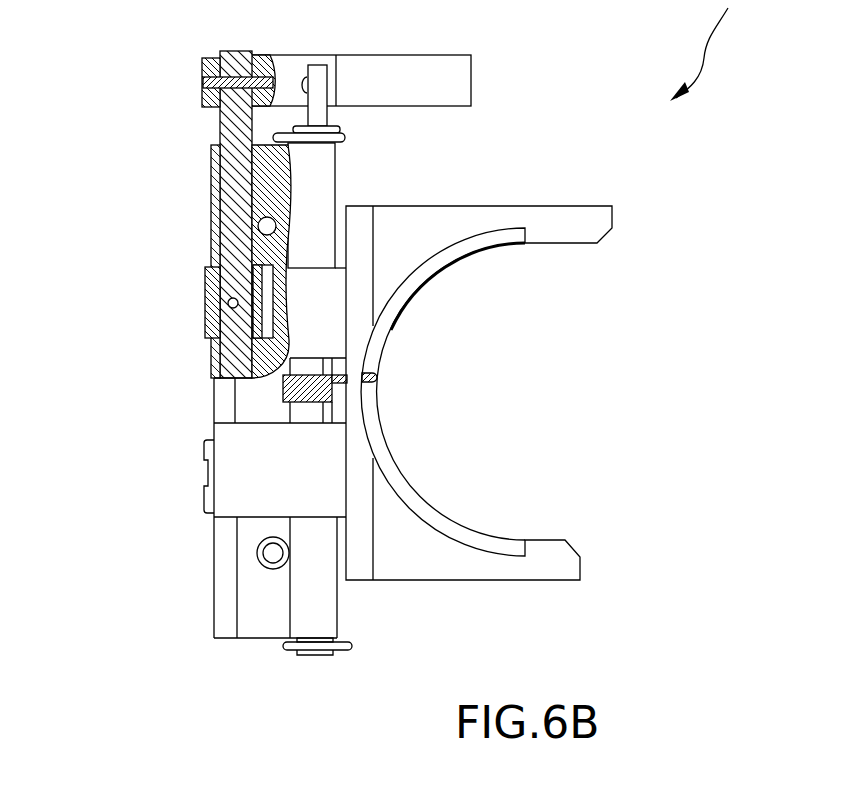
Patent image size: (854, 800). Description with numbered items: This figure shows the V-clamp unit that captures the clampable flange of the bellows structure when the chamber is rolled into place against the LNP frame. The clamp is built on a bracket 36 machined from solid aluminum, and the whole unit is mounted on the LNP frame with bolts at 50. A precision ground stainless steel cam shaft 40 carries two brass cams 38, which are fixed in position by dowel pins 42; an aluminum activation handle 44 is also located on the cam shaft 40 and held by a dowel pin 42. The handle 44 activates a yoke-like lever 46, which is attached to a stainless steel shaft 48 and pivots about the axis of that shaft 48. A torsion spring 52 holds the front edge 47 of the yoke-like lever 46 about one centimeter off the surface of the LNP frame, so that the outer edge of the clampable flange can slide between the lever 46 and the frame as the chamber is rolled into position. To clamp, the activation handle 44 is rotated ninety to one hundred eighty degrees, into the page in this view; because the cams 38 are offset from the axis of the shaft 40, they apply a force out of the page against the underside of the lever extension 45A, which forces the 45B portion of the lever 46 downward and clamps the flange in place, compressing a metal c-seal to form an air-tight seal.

The bracket 36 is at (214, 592).
The cams 38 is at (205, 323).
The cam shaft 40 is at (218, 52).
The dowel pins 42 is at (182, 83).
The activation handle 44 is at (471, 78).
The extension of yoke-like lever 45A is at (230, 442).
The portion of yoke-like lever 45B is at (467, 580).
The yoke-like lever 46 is at (588, 206).
The front edge 47 is at (583, 560).
The shaft 48 is at (323, 655).
The bolts 50 is at (258, 542).
The torsion spring 52 is at (283, 389).